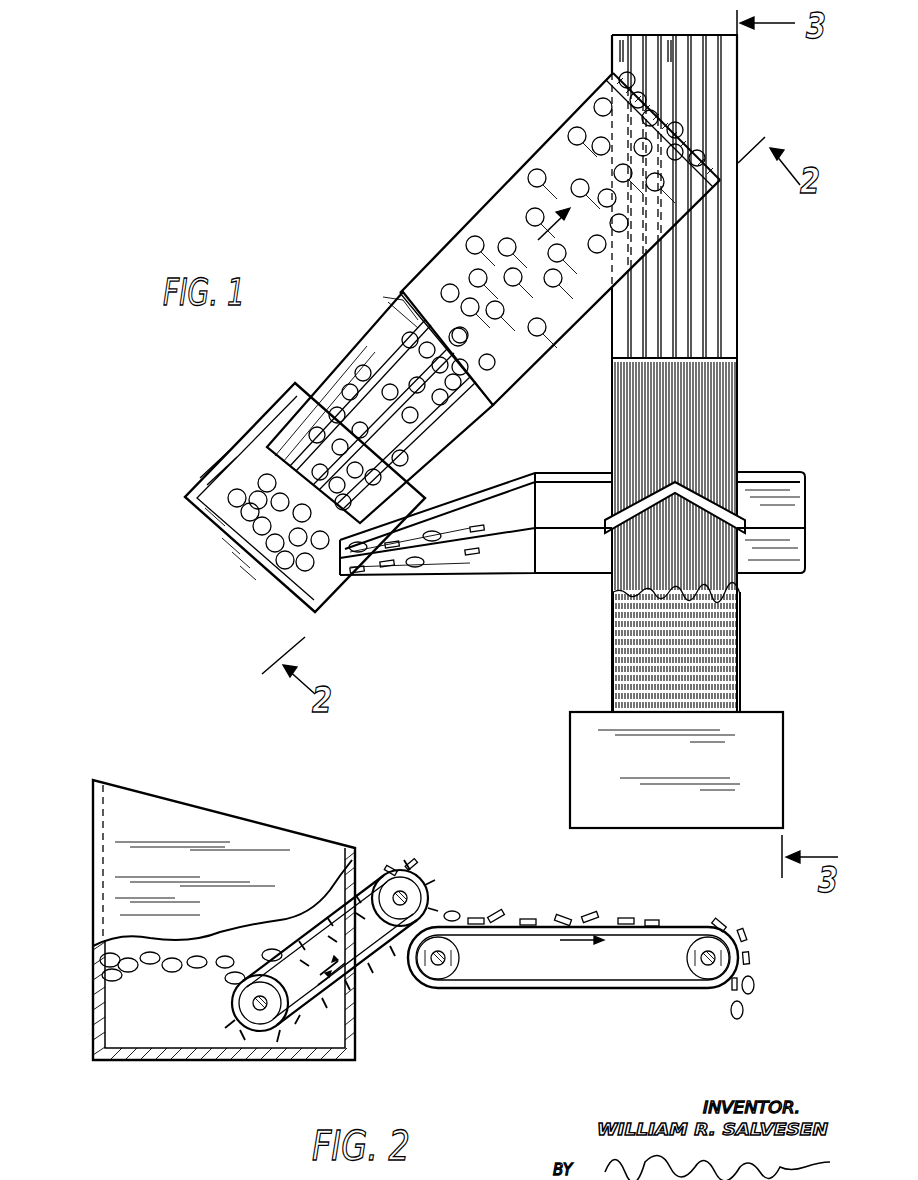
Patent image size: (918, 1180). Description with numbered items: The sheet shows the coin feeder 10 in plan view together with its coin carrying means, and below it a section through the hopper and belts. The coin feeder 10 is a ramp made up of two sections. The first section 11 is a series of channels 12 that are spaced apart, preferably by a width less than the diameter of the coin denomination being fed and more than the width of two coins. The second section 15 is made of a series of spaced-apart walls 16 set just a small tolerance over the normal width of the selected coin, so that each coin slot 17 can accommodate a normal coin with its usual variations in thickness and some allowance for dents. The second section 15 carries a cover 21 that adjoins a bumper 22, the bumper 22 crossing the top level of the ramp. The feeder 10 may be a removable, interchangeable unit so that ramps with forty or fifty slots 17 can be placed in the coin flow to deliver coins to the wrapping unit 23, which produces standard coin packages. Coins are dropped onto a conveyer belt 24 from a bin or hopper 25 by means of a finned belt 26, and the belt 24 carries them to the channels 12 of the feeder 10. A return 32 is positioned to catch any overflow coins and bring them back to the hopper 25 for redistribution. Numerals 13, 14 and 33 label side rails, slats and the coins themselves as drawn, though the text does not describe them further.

In FIG. 1, the coin feeder 10 is at (540, 88).
In FIG. 1, the first section 11 is at (740, 241).
In FIG. 1, the channels 12 is at (706, 306).
In FIG. 1, the side rails 13 is at (754, 56).
In FIG. 1, the guide slats 14 is at (625, 38).
In FIG. 1, the second section 15 is at (742, 636).
In FIG. 1, the walls 16 is at (722, 590).
In FIG. 1, the coin slot 17 is at (634, 583).
In FIG. 1, the cover 21 is at (626, 660).
In FIG. 1, the bumper 22 is at (702, 490).
In FIG. 1, the wrapping unit 23 is at (572, 742).
In FIG. 1, the conveyer belt 24 is at (483, 214).
In FIG. 2, the conveyer belt 24 is at (557, 988).
In FIG. 1, the hopper 25 is at (243, 553).
In FIG. 2, the hopper 25 is at (96, 961).
In FIG. 1, the finned belt 26 is at (342, 372).
In FIG. 2, the finned belt 26 is at (378, 962).
In FIG. 1, the return 32 is at (762, 474).
In FIG. 1, the articles (caps) 33 is at (700, 156).
In FIG. 2, the articles (caps) 33 is at (410, 862).